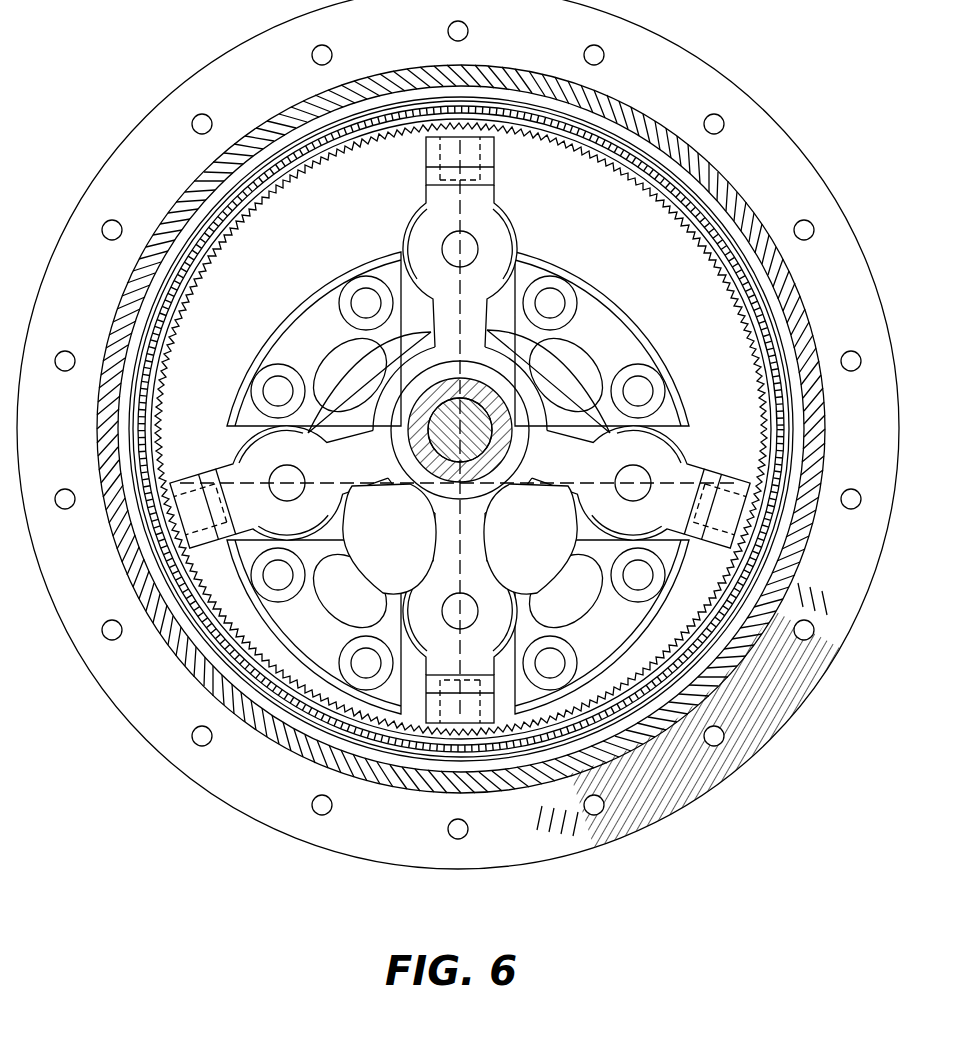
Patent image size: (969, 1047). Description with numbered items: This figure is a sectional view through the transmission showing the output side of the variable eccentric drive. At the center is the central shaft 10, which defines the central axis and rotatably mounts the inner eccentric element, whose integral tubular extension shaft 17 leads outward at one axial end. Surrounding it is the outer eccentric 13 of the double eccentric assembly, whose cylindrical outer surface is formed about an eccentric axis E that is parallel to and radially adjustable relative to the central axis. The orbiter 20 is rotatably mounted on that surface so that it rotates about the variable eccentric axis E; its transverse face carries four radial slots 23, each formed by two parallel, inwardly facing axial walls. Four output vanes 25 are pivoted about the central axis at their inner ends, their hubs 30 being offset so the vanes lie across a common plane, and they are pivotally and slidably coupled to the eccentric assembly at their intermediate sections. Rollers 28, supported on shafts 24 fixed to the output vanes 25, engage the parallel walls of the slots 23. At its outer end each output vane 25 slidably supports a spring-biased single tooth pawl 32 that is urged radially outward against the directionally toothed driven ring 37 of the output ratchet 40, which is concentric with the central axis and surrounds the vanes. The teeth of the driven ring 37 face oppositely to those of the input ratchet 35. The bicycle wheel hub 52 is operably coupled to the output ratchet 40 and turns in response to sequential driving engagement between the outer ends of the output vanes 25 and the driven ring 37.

The central shaft 10 is at (507, 483).
The outer eccentric 13 is at (393, 385).
The tubular extension shaft 17 is at (420, 485).
The orbiter 20 is at (325, 278).
The radial slots 23 is at (538, 263).
The shafts 24 is at (470, 249).
The output vanes 25 is at (468, 205).
The rollers 28 is at (400, 215).
The hubs 30 is at (510, 397).
The single tooth pawl 32 is at (462, 150).
The input ratchet 35 is at (657, 163).
The driven ring 37 is at (640, 188).
The output ratchet 40 is at (688, 212).
The bicycle wheel hub 52 is at (773, 170).
The eccentric axis E is at (455, 486).